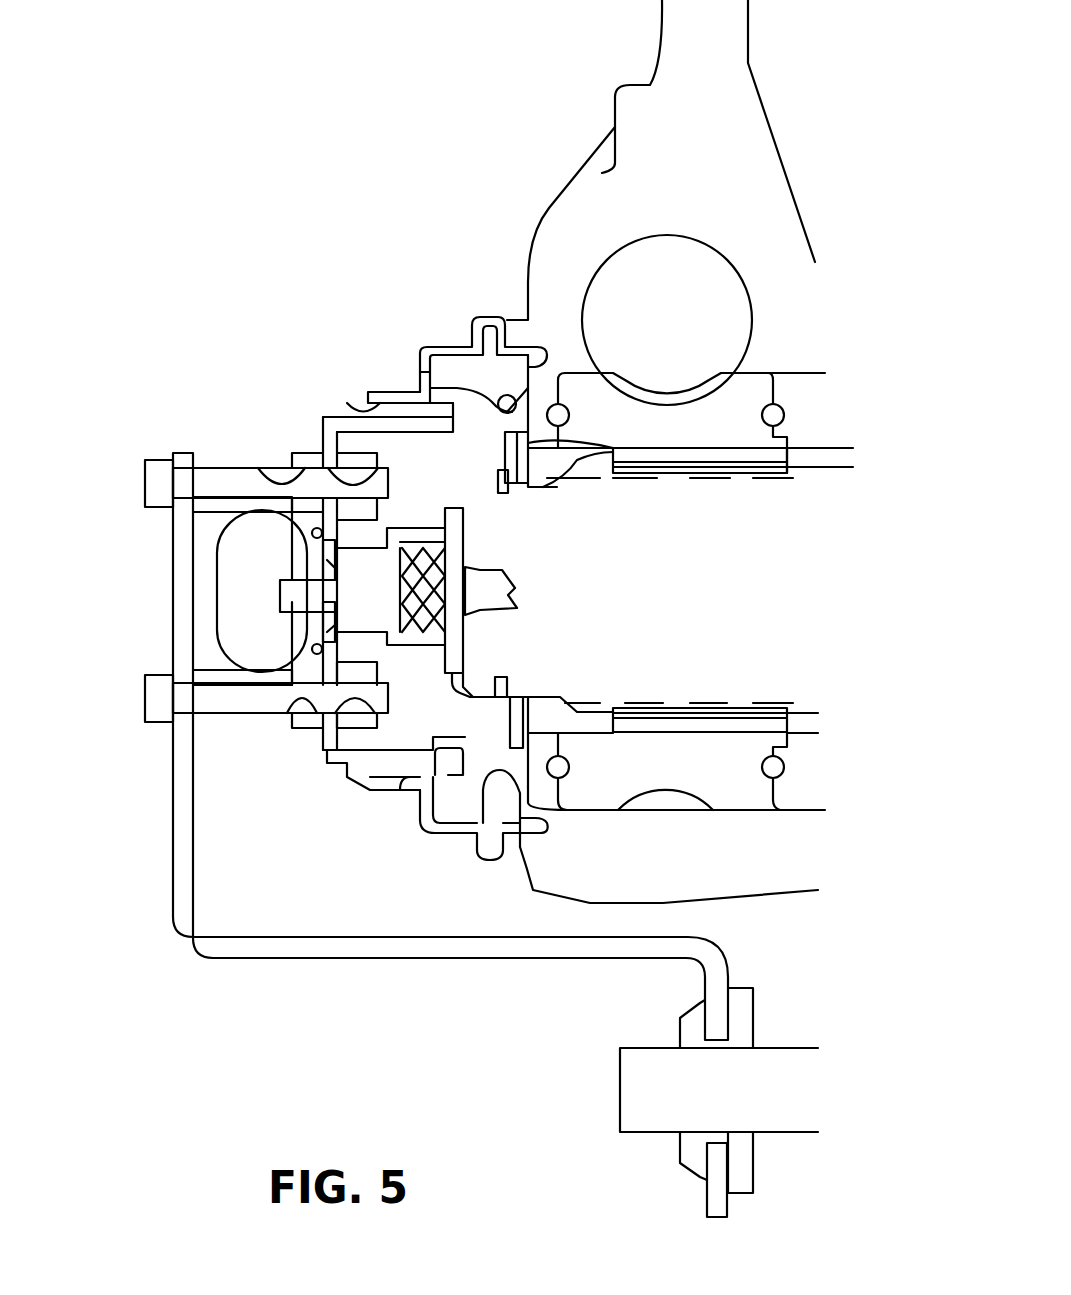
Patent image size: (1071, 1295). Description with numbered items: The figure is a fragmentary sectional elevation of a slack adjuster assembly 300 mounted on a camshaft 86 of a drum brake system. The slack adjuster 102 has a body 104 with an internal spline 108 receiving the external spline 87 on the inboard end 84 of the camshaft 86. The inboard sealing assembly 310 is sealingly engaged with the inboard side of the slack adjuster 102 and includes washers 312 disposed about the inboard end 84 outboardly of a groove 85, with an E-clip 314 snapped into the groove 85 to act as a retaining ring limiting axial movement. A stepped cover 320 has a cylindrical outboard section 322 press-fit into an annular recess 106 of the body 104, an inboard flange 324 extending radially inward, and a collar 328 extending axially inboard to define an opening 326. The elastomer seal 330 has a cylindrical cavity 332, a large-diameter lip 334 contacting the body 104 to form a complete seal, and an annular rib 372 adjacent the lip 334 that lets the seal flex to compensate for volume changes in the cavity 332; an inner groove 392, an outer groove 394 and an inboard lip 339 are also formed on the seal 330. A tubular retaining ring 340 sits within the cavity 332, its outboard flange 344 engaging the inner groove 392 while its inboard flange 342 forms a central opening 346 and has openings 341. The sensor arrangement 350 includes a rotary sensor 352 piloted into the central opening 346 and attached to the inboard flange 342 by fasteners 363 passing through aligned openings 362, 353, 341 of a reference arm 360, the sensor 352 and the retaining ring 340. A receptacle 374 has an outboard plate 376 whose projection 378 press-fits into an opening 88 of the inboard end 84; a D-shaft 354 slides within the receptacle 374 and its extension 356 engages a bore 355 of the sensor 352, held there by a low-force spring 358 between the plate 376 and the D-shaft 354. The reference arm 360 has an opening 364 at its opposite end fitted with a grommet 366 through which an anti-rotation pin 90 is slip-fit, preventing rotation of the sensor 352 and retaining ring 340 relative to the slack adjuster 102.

The inboard end 84 is at (613, 452).
The groove 85 is at (478, 500).
The camshaft 86 is at (803, 466).
The external spline 87 is at (590, 713).
The opening 88 is at (518, 605).
The anti-rotation pin 90 is at (795, 1048).
The slack adjuster 102 is at (790, 153).
The body 104 is at (549, 211).
The annular recess 106 is at (533, 343).
The internal spline 108 is at (697, 710).
The slack adjuster assembly 300 is at (298, 265).
The inboard sealing assembly 310 is at (284, 369).
The washers 312 is at (500, 487).
The E-clip 314 is at (596, 418).
The cover 320 is at (424, 343).
The outboard section 322 is at (462, 340).
The inboard flange 324 is at (420, 790).
The opening 326 is at (360, 410).
The collar 328 is at (397, 387).
The seal 330 is at (457, 792).
The cavity 332 is at (520, 405).
The lip 334 is at (533, 838).
The inboard lip 339 is at (360, 396).
The retaining ring 340 is at (334, 760).
The openings 341 is at (375, 478).
The inboard flange 342 is at (322, 432).
The outboard flange 344 is at (500, 468).
The central opening 346 is at (333, 545).
The sensor arrangement 350 is at (383, 527).
The rotary sensor 352 is at (227, 672).
The openings 353 is at (262, 470).
The D-shaft 354 is at (383, 633).
The bore 355 is at (293, 610).
The extension 356 is at (304, 565).
The spring 358 is at (420, 567).
The reference arm 360 is at (171, 848).
The openings 362 is at (184, 500).
The fasteners 363 is at (147, 478).
The opening 364 is at (713, 1143).
The grommet 366 is at (755, 1000).
The rib 372 is at (526, 872).
The receptacle 374 is at (422, 527).
The outboard plate 376 is at (458, 676).
The projection 378 is at (485, 608).
The inner groove 392 is at (482, 838).
The outer groove 394 is at (428, 773).